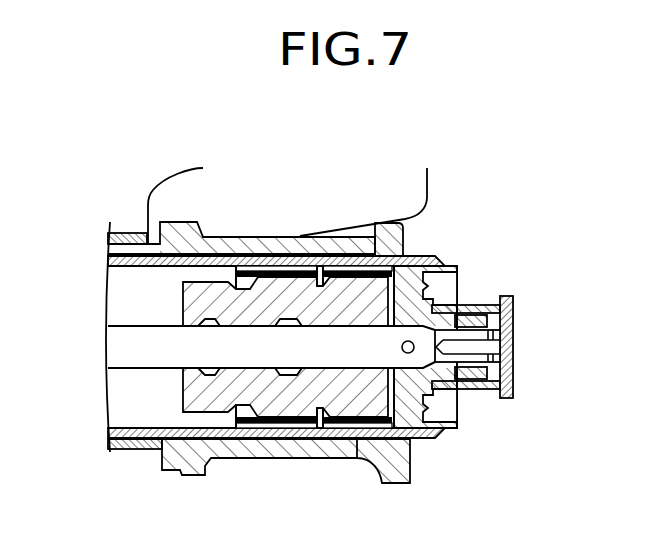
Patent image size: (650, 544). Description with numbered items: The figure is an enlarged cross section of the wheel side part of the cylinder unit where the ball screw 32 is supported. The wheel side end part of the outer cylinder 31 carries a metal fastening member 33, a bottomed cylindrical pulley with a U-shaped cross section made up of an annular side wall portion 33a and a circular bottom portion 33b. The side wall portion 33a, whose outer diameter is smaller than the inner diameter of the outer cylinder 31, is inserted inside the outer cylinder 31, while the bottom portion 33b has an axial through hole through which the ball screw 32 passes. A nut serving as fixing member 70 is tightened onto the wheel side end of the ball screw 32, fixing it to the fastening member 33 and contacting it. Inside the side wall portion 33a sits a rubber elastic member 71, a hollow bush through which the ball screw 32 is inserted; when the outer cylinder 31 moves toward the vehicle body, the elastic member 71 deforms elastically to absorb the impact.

The outer cylinder 31 is at (200, 260).
The ball screw 32 is at (147, 345).
The fastening member 33 is at (413, 275).
The side wall portion 33a is at (366, 253).
The bottom portion 33b is at (407, 297).
The fixing member 70 is at (480, 368).
The elastic member 71 is at (278, 392).